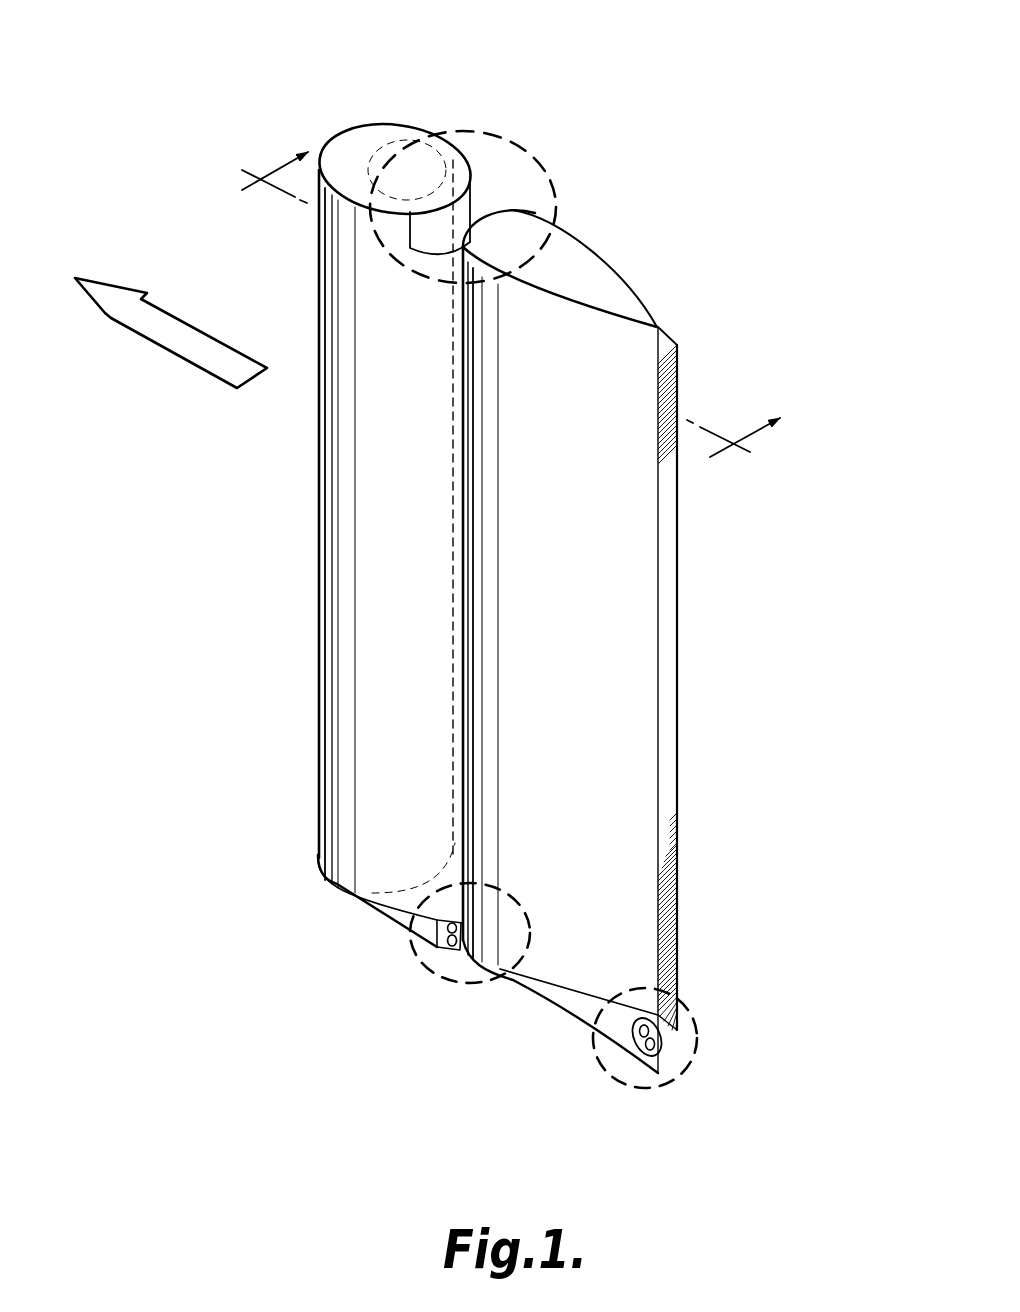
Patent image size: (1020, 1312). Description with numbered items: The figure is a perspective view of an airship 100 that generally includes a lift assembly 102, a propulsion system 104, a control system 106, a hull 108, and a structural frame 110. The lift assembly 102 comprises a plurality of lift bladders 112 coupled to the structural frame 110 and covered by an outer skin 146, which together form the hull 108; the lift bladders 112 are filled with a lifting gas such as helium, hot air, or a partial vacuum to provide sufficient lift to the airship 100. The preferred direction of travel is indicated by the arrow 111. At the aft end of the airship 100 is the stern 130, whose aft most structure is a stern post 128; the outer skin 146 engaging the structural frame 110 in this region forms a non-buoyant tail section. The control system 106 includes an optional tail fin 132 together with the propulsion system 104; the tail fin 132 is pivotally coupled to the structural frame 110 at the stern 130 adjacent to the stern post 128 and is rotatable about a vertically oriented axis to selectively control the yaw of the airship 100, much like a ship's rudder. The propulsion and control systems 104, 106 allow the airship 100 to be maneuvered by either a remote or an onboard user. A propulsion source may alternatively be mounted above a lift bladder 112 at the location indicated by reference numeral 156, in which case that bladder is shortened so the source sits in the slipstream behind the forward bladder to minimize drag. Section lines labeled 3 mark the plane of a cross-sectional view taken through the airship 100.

The airship 100 is at (739, 113).
The lift assembly 102 is at (438, 185).
The propulsion system 104 is at (504, 135).
The control system 106 is at (685, 1089).
The hull 108 is at (369, 675).
The structural frame 110 is at (468, 975).
The arrow 111 is at (180, 340).
The lift bladders 112 is at (382, 174).
The stern post 128 is at (660, 327).
The stern 130 is at (640, 296).
The tail fin 132 is at (680, 704).
The outer skin 146 is at (355, 567).
The location above lift bladder for propulsion source 156 is at (494, 197).
The section line 3 is at (502, 309).